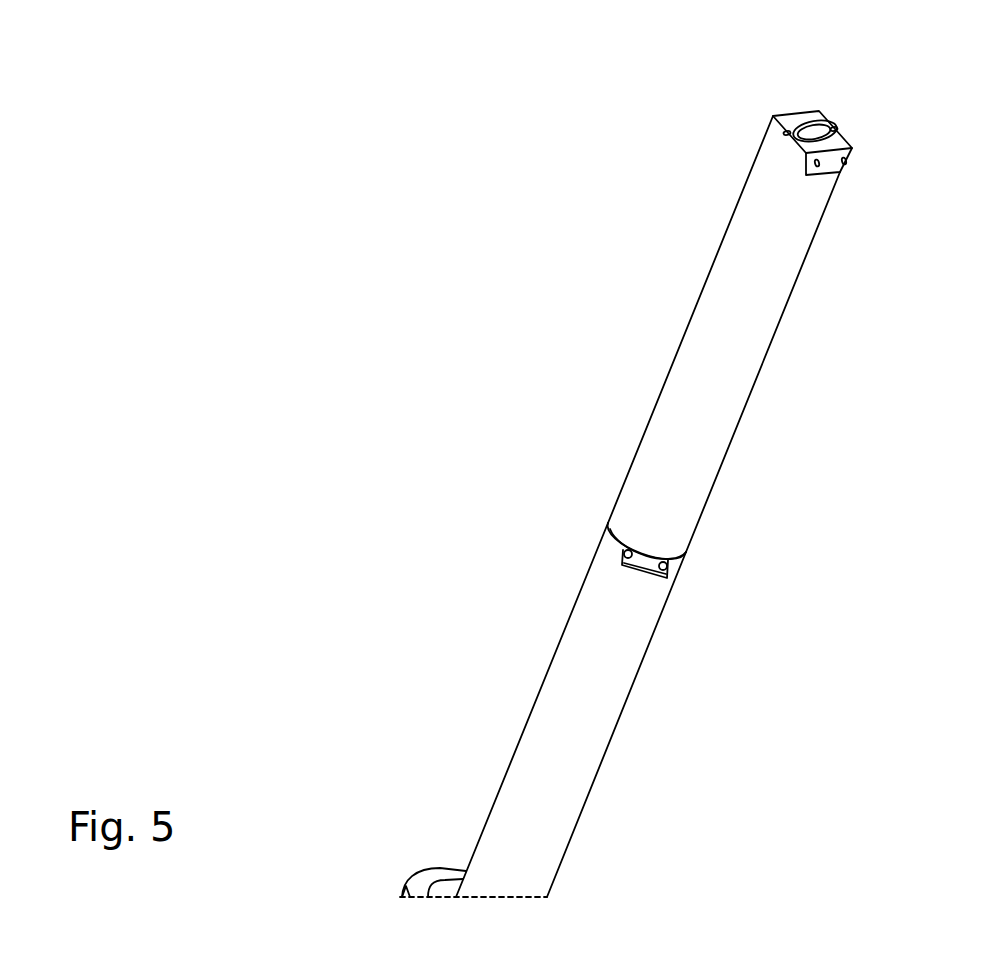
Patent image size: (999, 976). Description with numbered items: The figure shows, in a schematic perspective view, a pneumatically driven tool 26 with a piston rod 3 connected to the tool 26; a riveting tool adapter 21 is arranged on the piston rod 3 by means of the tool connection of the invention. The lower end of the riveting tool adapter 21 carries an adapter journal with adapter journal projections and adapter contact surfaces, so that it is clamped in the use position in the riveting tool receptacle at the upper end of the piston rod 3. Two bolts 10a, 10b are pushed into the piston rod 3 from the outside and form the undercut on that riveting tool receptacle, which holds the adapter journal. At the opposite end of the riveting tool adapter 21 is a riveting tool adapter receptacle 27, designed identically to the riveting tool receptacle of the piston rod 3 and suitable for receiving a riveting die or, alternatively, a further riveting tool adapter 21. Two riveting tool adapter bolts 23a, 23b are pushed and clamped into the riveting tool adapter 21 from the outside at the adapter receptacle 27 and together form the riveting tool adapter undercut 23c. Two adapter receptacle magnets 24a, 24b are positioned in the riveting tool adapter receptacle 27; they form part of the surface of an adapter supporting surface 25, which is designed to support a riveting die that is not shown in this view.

The piston rod 3 is at (550, 710).
The riveting tool adapter 21 is at (748, 348).
The riveting tool adapter receptacle 27 is at (767, 96).
The adapter supporting surface 25 is at (815, 121).
The riveting tool adapter undercut 23c is at (820, 138).
The adapter receptacle magnet 24a is at (838, 130).
The adapter receptacle magnet 24b is at (784, 134).
The riveting tool adapter bolt 23a is at (847, 162).
The riveting tool adapter bolt 23b is at (814, 163).
The bolt 10a is at (668, 566).
The bolt 10b is at (623, 553).
The pneumatically driven tool 26 is at (420, 876).